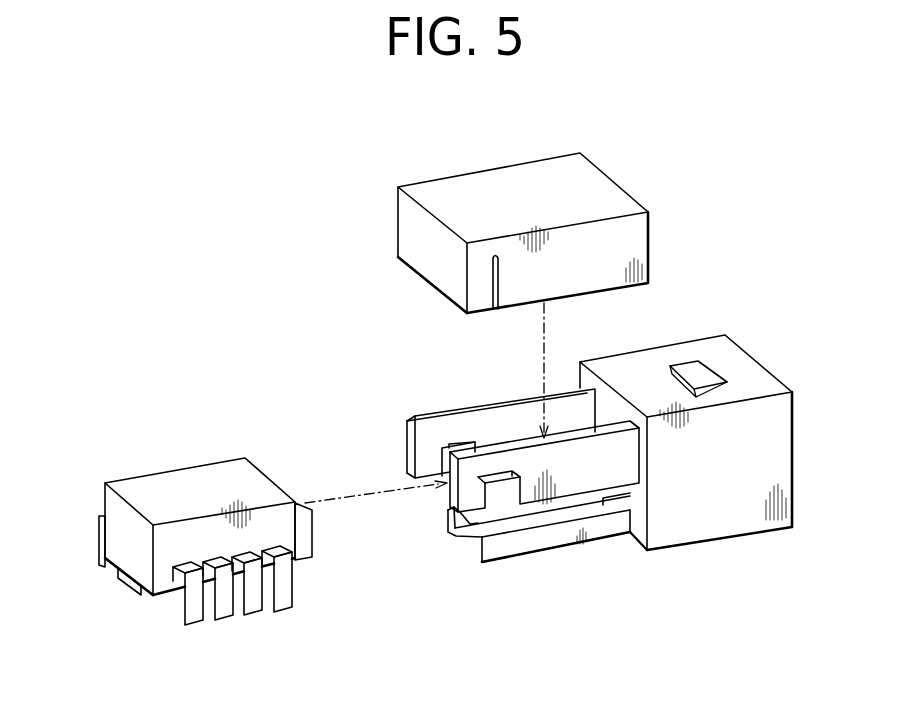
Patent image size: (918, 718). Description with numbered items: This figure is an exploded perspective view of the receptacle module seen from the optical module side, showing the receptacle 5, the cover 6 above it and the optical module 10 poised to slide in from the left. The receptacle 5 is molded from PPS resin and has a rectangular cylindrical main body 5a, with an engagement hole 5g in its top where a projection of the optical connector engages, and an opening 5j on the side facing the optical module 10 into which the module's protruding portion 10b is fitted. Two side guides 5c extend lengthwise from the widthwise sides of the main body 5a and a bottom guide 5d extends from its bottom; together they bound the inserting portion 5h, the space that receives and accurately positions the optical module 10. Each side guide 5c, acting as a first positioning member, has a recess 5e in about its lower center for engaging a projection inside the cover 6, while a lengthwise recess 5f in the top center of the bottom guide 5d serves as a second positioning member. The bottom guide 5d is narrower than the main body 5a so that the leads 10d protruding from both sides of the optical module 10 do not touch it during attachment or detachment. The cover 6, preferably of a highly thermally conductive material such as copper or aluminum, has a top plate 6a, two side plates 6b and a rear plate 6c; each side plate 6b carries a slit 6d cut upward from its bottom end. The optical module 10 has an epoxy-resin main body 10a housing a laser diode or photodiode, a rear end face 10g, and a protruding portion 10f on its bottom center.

The receptacle 5 is at (757, 360).
The main body 5a is at (729, 492).
The side guides 5c is at (505, 405).
The bottom guide 5d is at (500, 552).
The recess 5e is at (458, 447).
The recess 5f is at (458, 543).
The engagement hole 5g is at (690, 377).
The inserting portion 5h is at (445, 509).
The opening 5j is at (624, 501).
The cover 6 is at (613, 178).
The top plate 6a is at (497, 186).
The side plates 6b is at (620, 243).
The rear plate 6c is at (415, 229).
The slit 6d is at (502, 273).
The optical module 10 is at (162, 469).
The main body 10a is at (222, 481).
The protruding portion 10b is at (305, 547).
The leads 10d is at (99, 535).
The protruding portion 10f is at (126, 590).
The rear end face 10g is at (125, 556).